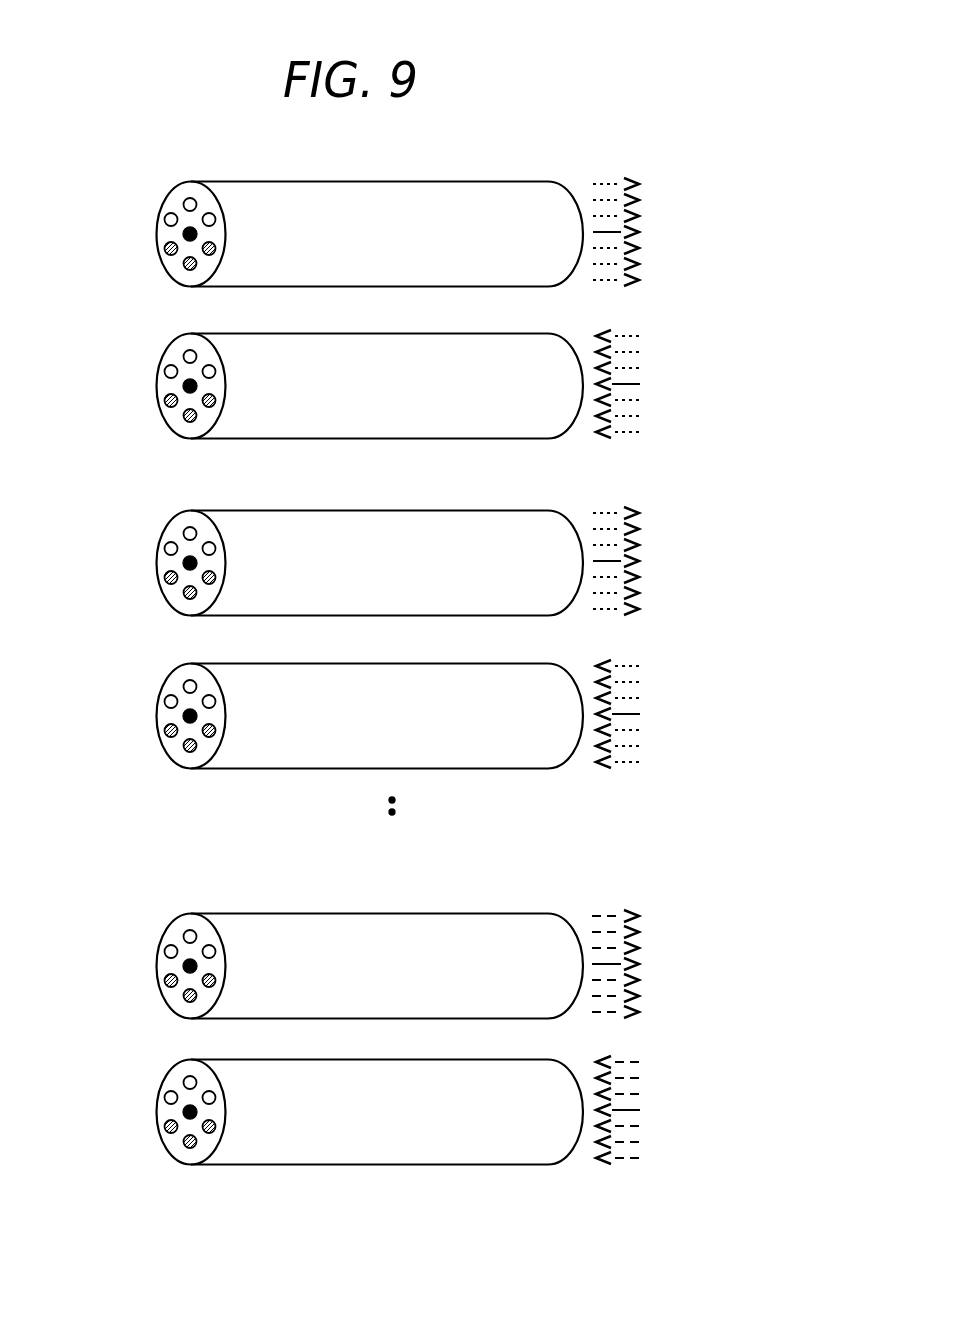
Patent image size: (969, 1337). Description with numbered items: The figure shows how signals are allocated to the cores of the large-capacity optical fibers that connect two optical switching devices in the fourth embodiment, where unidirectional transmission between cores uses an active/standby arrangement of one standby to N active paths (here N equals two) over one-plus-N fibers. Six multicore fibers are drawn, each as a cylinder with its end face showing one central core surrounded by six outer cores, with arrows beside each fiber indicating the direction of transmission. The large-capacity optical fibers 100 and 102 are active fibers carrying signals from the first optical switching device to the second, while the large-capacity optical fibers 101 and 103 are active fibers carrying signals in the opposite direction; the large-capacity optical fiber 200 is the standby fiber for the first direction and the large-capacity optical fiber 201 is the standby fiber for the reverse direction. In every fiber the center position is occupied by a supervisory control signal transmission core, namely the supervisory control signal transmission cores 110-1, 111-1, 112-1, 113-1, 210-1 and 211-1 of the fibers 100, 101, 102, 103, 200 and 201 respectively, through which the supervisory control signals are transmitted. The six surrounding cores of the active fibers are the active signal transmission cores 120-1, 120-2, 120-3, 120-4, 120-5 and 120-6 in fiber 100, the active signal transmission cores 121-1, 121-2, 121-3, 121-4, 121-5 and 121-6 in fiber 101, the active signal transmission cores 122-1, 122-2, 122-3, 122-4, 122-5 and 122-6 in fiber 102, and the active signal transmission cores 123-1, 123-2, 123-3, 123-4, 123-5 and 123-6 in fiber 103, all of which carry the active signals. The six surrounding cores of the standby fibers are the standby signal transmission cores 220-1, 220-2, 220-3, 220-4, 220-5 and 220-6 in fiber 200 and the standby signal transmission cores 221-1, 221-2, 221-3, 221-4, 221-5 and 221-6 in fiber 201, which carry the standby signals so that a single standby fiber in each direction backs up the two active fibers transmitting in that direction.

The large-capacity optical fiber 100 is at (426, 194).
The large-capacity optical fiber 101 is at (319, 385).
The large-capacity optical fiber 102 is at (319, 562).
The large-capacity optical fiber 103 is at (319, 715).
The large-capacity optical fiber 200 is at (318, 972).
The large-capacity optical fiber 201 is at (318, 1118).
The supervisory control signal transmission core 110-1 is at (190, 241).
The supervisory control signal transmission core 111-1 is at (132, 421).
The supervisory control signal transmission core 112-1 is at (132, 598).
The supervisory control signal transmission core 113-1 is at (132, 751).
The supervisory control signal transmission core 210-1 is at (157, 1007).
The supervisory control signal transmission core 211-1 is at (157, 1153).
The active signal transmission core 120-1 is at (215, 216).
The active signal transmission core 120-2 is at (185, 201).
The active signal transmission core 120-3 is at (167, 219).
The active signal transmission core 120-4 is at (165, 248).
The active signal transmission core 120-5 is at (198, 266).
The active signal transmission core 120-6 is at (217, 248).
The active signal transmission core 121-1 is at (266, 357).
The active signal transmission core 121-2 is at (134, 344).
The active signal transmission core 121-3 is at (116, 383).
The active signal transmission core 121-4 is at (118, 416).
The active signal transmission core 121-5 is at (244, 436).
The active signal transmission core 121-6 is at (271, 405).
The active signal transmission core 122-1 is at (266, 534).
The active signal transmission core 122-2 is at (134, 521).
The active signal transmission core 122-3 is at (116, 560).
The active signal transmission core 122-4 is at (118, 593).
The active signal transmission core 122-5 is at (244, 613).
The active signal transmission core 122-6 is at (271, 582).
The active signal transmission core 123-1 is at (266, 687).
The active signal transmission core 123-2 is at (134, 674).
The active signal transmission core 123-3 is at (116, 713).
The active signal transmission core 123-4 is at (118, 746).
The active signal transmission core 123-5 is at (244, 766).
The active signal transmission core 123-6 is at (271, 735).
The standby signal transmission core 220-1 is at (264, 939).
The standby signal transmission core 220-2 is at (134, 926).
The standby signal transmission core 220-3 is at (115, 964).
The standby signal transmission core 220-4 is at (118, 997).
The standby signal transmission core 220-5 is at (244, 1017).
The standby signal transmission core 220-6 is at (268, 980).
The standby signal transmission core 221-1 is at (264, 1085).
The standby signal transmission core 221-2 is at (134, 1072).
The standby signal transmission core 221-3 is at (115, 1110).
The standby signal transmission core 221-4 is at (118, 1143).
The standby signal transmission core 221-5 is at (244, 1163).
The standby signal transmission core 221-6 is at (268, 1126).